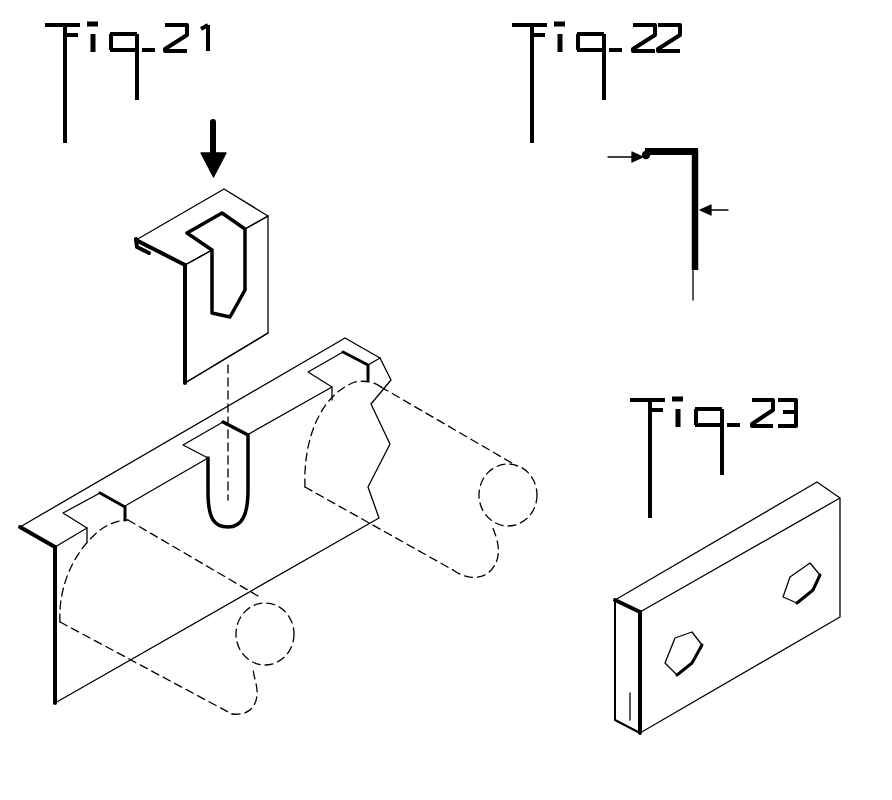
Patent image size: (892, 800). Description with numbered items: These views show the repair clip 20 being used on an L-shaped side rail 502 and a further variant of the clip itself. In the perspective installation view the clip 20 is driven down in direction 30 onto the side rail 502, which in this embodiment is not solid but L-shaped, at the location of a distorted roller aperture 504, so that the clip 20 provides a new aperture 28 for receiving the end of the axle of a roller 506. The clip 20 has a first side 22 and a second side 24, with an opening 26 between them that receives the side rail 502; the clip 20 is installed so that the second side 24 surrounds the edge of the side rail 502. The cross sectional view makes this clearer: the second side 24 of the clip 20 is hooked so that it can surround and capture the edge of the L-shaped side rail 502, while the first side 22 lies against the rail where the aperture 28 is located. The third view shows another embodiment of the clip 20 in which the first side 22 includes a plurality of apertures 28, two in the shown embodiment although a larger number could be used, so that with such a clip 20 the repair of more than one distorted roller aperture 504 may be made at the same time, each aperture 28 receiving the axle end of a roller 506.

In FIG. 21, the clip 20 is at (191, 264).
In FIG. 22, the clip 20 is at (670, 186).
In FIG. 23, the clip 20 is at (707, 592).
In FIG. 21, the first side 22 is at (252, 322).
In FIG. 22, the first side 22 is at (698, 247).
In FIG. 23, the first side 22 is at (640, 710).
In FIG. 21, the second side 24 is at (134, 243).
In FIG. 22, the second side 24 is at (652, 160).
In FIG. 23, the second side 24 is at (615, 692).
In FIG. 21, the opening 26 is at (163, 263).
In FIG. 23, the opening 26 is at (630, 693).
In FIG. 21, the aperture 28 is at (218, 279).
In FIG. 23, the aperture 28 is at (795, 590).
In FIG. 21, the direction 30 is at (220, 142).
In FIG. 21, the side rail 502 is at (205, 520).
In FIG. 22, the side rail 502 is at (692, 277).
In FIG. 21, the distorted roller aperture 504 is at (238, 503).
In FIG. 21, the roller 506 is at (446, 399).